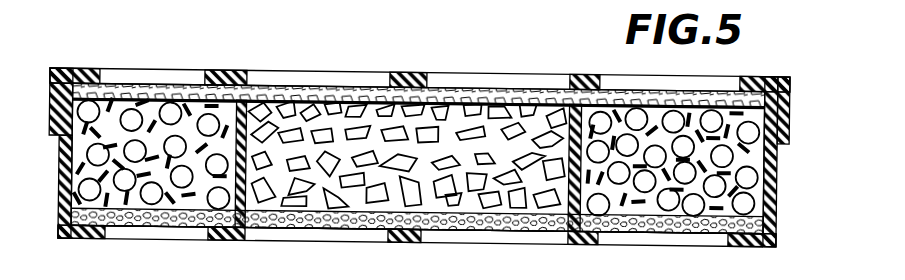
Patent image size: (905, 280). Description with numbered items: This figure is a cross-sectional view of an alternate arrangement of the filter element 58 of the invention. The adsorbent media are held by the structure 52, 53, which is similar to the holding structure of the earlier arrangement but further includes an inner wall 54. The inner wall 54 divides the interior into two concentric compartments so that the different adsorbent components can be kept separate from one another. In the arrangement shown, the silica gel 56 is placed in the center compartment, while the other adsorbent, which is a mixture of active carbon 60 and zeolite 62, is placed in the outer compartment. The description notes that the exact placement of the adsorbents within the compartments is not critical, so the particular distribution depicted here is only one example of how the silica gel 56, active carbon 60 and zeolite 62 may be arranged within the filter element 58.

The filter element 58 is at (118, 56).
The structure for holding the adsorbent media 52 is at (405, 82).
The silica gel 56 is at (440, 112).
The active carbon 60 is at (188, 110).
The structure for holding the adsorbent media 53 is at (412, 228).
The zeolite 62 is at (163, 110).
The inner wall 54 is at (273, 110).